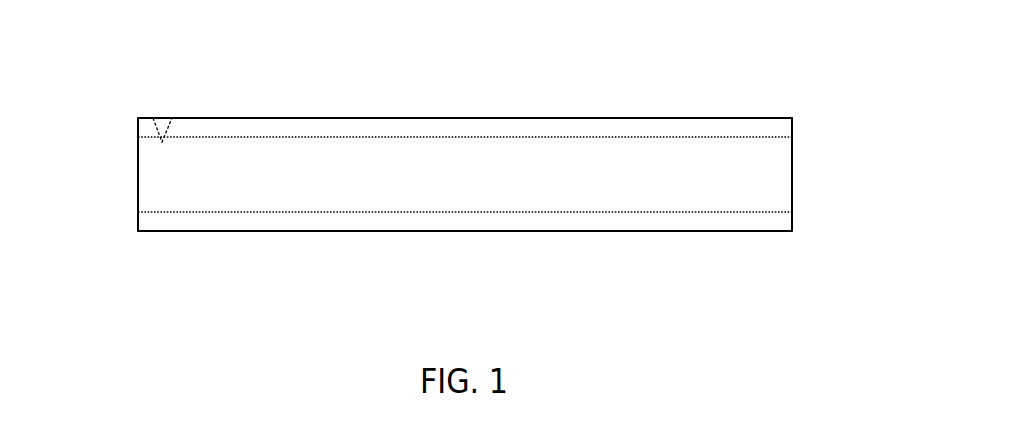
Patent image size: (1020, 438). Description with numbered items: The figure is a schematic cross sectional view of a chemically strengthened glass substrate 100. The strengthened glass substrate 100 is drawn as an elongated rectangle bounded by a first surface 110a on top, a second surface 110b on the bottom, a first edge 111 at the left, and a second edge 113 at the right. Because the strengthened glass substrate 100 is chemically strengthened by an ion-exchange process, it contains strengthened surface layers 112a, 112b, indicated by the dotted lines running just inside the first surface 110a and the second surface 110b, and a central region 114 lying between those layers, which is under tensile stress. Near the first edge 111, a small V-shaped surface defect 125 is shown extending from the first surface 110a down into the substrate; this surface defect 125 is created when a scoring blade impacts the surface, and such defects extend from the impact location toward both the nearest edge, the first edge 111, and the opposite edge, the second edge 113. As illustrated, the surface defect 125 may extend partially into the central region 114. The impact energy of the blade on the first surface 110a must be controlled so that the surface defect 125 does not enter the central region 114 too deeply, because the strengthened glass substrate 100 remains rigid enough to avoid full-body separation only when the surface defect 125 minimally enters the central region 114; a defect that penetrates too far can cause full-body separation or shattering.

The strengthened glass substrate 100 is at (458, 167).
The first surface 110a is at (454, 77).
The second surface 110b is at (465, 274).
The first edge 111 is at (92, 159).
The second edge 113 is at (836, 166).
The strengthened surface layer 112a is at (465, 91).
The strengthened surface layer 112b is at (465, 261).
The central region 114 is at (414, 189).
The surface defect 125 is at (191, 152).